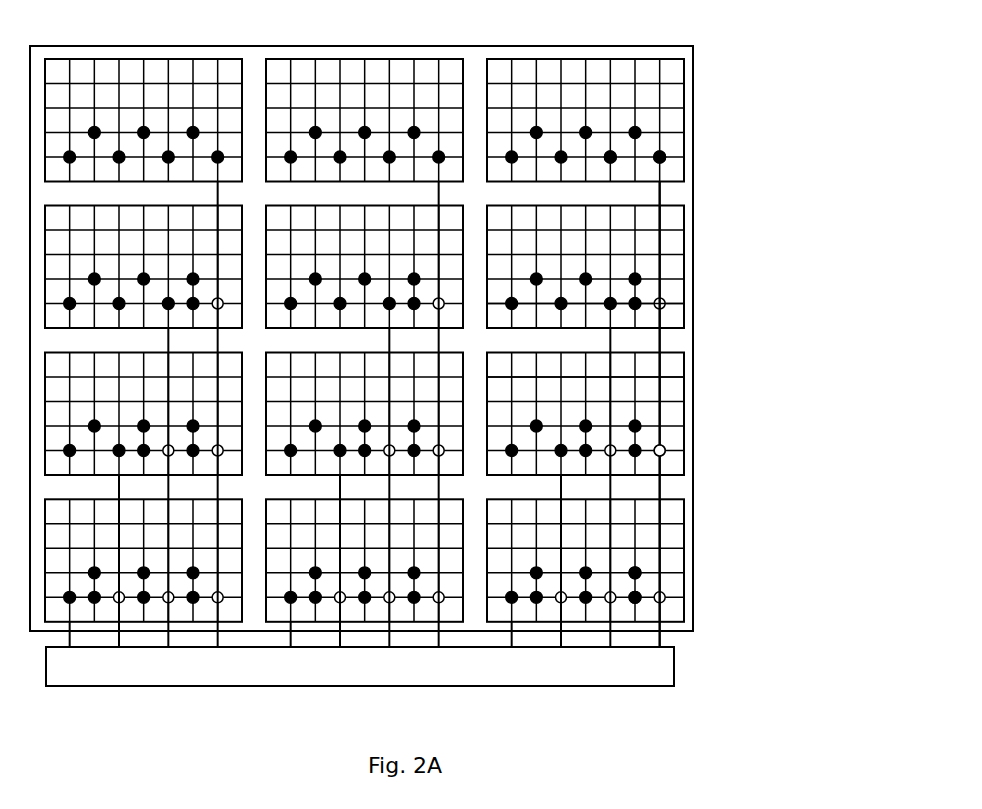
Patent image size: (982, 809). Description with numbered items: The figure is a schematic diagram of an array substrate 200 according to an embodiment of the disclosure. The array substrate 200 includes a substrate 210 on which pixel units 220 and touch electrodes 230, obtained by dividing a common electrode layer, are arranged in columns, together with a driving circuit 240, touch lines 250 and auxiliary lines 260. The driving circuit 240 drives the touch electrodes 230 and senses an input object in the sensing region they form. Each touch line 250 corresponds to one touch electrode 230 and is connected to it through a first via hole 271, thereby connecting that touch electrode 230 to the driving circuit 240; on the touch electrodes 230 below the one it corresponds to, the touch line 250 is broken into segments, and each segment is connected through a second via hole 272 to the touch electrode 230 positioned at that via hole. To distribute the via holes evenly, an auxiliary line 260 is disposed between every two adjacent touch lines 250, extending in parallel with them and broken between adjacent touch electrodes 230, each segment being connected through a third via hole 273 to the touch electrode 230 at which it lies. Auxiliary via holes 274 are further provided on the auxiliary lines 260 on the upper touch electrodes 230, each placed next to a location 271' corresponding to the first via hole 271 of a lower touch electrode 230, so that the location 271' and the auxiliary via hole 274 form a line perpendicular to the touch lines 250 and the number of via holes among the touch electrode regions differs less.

The array substrate 200 is at (400, 353).
The substrate 210 is at (500, 46).
The touch electrode 230 is at (683, 61).
The touch line 250 is at (662, 221).
The pixel unit 220 is at (678, 288).
The auxiliary line 260 is at (635, 386).
The first via hole 271 is at (713, 145).
The second via hole 272 is at (613, 159).
The location corresponding to the first via hole 271' is at (710, 468).
The third via hole 273 is at (638, 569).
The auxiliary via hole 274 is at (638, 600).
The driving circuit 240 is at (640, 666).